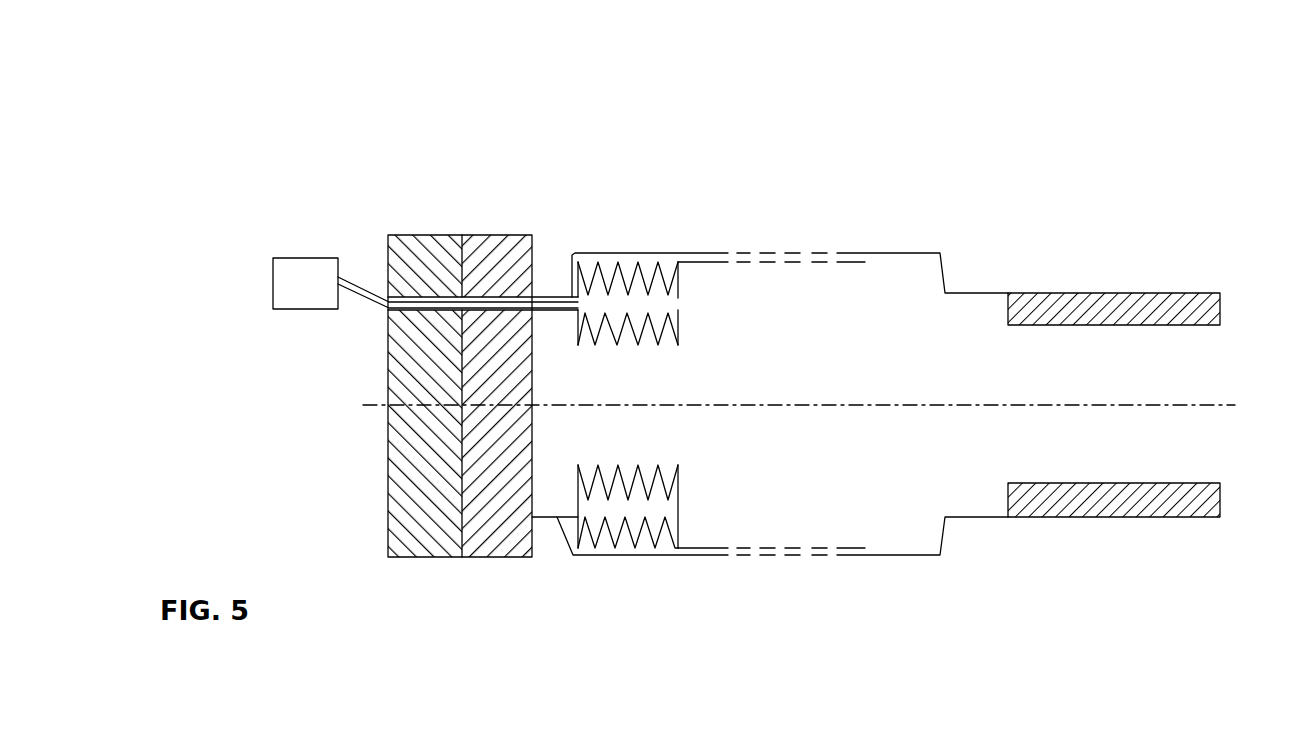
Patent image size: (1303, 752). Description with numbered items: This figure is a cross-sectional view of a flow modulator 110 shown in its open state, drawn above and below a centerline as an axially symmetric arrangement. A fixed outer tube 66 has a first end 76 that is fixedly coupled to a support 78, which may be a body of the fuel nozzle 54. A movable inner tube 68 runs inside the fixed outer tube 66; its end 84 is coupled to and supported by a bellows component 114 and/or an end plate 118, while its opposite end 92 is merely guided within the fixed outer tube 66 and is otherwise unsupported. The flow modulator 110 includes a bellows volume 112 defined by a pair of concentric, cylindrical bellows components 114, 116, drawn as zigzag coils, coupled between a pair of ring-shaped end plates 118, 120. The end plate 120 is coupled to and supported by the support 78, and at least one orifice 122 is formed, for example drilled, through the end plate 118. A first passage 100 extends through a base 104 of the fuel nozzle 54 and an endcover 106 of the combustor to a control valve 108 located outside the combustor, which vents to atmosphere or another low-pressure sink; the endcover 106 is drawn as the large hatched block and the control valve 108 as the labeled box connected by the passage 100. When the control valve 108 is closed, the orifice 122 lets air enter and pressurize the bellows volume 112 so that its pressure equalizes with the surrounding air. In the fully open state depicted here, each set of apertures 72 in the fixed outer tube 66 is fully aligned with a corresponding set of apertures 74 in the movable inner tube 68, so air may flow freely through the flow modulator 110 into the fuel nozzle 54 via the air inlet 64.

The fuel nozzle 54 is at (1170, 111).
The air inlet 64 is at (834, 225).
The fixed outer tube 66 is at (860, 253).
The movable inner tube 68 is at (818, 266).
The apertures 72 is at (755, 250).
The apertures 74 is at (778, 266).
The first end 76 is at (571, 268).
The support 78 is at (544, 268).
The end 84 is at (682, 254).
The opposite end 92 is at (850, 266).
The first passage 100 is at (373, 302).
The base 104 is at (533, 428).
The endcover 106 is at (388, 463).
The control valve 108 is at (326, 294).
The flow modulator 110 is at (940, 135).
The bellows volume 112 is at (619, 300).
The bellows component 114 is at (608, 290).
The bellows component 116 is at (613, 337).
The end plate 118 is at (679, 318).
The end plate 120 is at (577, 320).
The orifice 122 is at (683, 298).